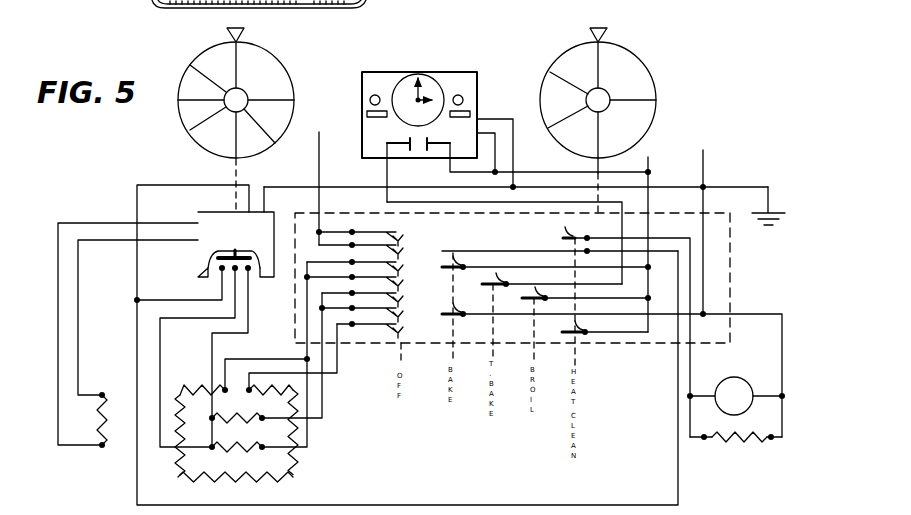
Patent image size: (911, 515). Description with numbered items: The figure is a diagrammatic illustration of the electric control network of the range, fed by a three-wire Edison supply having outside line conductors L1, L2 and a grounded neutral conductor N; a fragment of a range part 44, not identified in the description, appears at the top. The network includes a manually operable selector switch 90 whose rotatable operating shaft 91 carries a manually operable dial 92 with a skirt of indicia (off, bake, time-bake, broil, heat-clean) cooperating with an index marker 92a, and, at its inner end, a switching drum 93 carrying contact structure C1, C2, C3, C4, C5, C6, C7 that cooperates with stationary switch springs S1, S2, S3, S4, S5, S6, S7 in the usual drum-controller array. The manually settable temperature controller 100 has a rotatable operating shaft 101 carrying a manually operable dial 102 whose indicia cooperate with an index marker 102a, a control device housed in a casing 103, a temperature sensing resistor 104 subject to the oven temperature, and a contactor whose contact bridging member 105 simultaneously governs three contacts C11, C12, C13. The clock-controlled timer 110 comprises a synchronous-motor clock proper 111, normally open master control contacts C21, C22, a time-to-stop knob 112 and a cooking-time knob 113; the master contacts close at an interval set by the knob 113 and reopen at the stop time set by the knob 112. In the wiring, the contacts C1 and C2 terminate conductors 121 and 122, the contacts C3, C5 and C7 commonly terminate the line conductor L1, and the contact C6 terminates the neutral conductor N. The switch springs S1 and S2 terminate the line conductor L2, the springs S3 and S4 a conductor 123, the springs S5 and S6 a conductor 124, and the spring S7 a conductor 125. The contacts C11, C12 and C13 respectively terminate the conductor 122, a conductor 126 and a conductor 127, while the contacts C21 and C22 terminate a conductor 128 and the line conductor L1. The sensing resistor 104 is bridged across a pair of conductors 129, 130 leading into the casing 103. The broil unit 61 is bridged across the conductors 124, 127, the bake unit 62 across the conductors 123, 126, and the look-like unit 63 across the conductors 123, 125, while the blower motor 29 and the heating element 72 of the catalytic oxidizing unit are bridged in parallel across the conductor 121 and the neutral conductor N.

The oven door / range top 44 is at (303, 0).
The temperature controller 100 is at (172, 166).
The rotatable operating shaft 101 is at (238, 172).
The manually operable dial 102 is at (286, 82).
The index marker 102a is at (226, 30).
The casing 103 is at (236, 244).
The temperature sensing resistor 104 is at (106, 436).
The contact bridging member 105 is at (240, 258).
The clock-controlled timer 110 is at (387, 67).
The clock proper 111 is at (433, 80).
The time-to-stop knob 112 is at (463, 100).
The cooking-time knob 113 is at (370, 100).
The conductor 121 is at (690, 372).
The conductor 122 is at (137, 185).
The conductor 123 is at (270, 359).
The conductor 124 is at (322, 410).
The conductor 125 is at (337, 365).
The conductor 126 is at (160, 338).
The conductor 127 is at (212, 366).
The conductor 128 is at (373, 202).
The conductor 129 is at (58, 284).
The conductor 130 is at (78, 288).
The broil unit 61 is at (232, 420).
The bake unit 62 is at (232, 449).
The look-like unit 63 is at (232, 480).
The heating element 72 is at (734, 445).
The blower motor 29 is at (736, 396).
The selector switch 90 is at (682, 89).
The rotatable operating shaft 91 is at (605, 172).
The manually operable dial 92 is at (656, 120).
The index marker 92a is at (604, 28).
The switching drum 93 is at (732, 266).
The contact C1 is at (566, 236).
The contact C2 is at (465, 251).
The contact C3 is at (466, 265).
The contact C4 is at (509, 282).
The contact C5 is at (548, 296).
The contact C6 is at (464, 312).
The contact C7 is at (588, 330).
The contact C11 is at (218, 267).
The contact C12 is at (232, 274).
The contact C13 is at (250, 274).
The master control contact C21 is at (405, 140).
The master control contact C22 is at (430, 140).
The switch spring S1 is at (359, 232).
The switch spring S2 is at (361, 246).
The switch spring S3 is at (332, 348).
The switch spring S4 is at (355, 278).
The switch spring S5 is at (332, 349).
The switch spring S6 is at (362, 309).
The switch spring S7 is at (326, 350).
The line conductor L1 is at (650, 165).
The line conductor L2 is at (319, 150).
The neutral conductor N is at (306, 187).